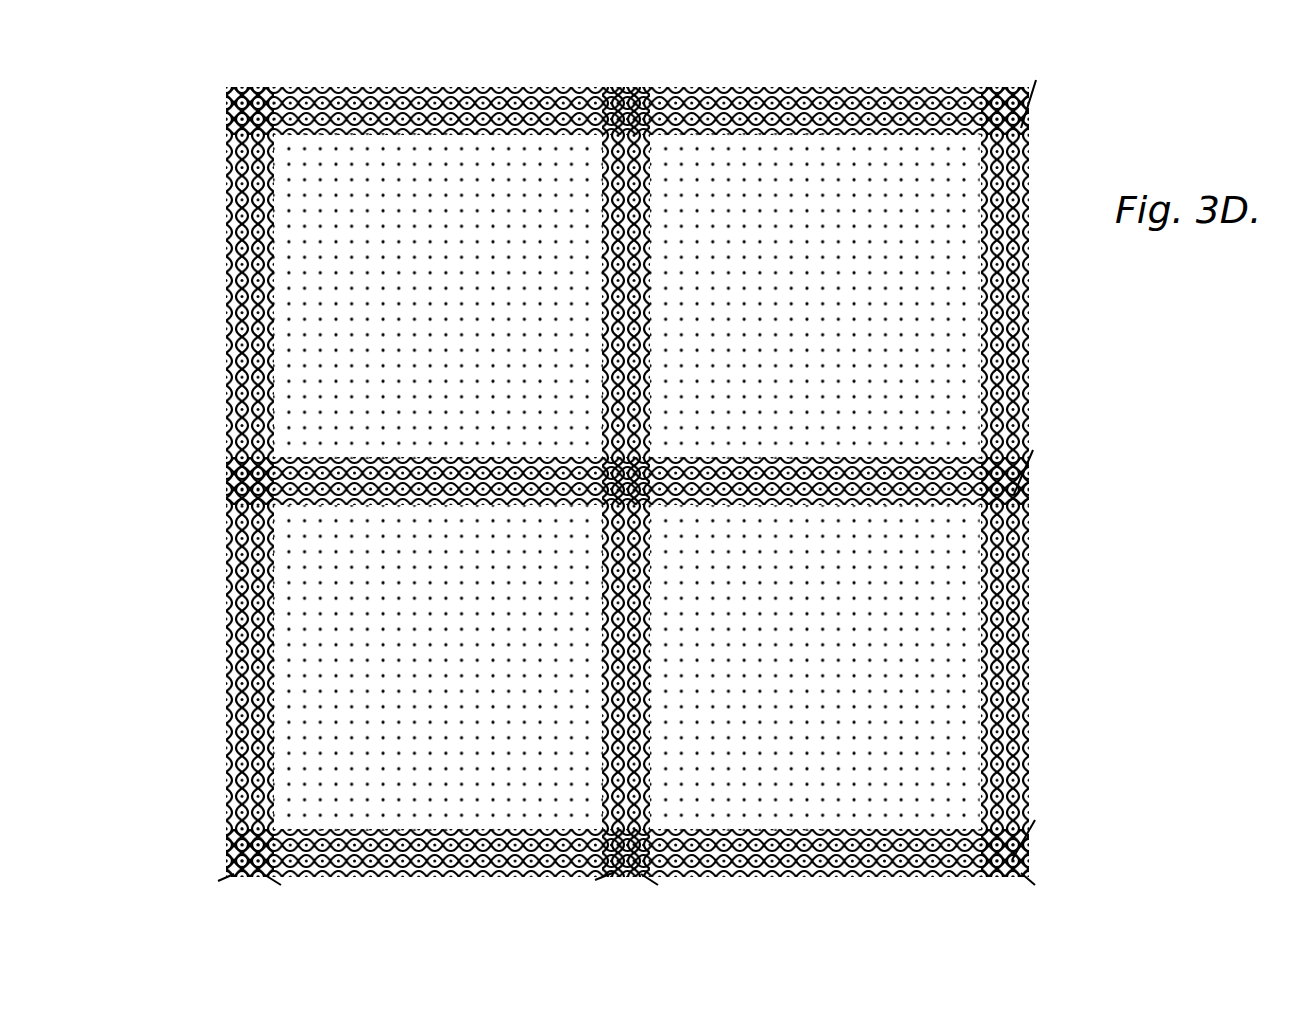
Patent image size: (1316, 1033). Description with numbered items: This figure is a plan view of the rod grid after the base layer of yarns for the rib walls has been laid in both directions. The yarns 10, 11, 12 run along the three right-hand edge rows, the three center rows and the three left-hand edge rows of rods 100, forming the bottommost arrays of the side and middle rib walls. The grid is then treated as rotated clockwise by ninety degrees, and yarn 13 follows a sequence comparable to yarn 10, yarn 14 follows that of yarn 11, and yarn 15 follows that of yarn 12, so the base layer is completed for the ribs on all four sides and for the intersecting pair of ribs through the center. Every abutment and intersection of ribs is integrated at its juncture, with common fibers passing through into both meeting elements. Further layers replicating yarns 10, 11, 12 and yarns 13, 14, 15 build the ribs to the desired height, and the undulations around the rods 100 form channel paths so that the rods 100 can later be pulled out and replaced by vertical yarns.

The rods 100 is at (633, 489).
The yarn 10 is at (1027, 862).
The yarn 11 is at (1025, 498).
The yarn 12 is at (1023, 130).
The yarn 13 is at (215, 866).
The yarn 14 is at (588, 872).
The yarn 15 is at (965, 875).